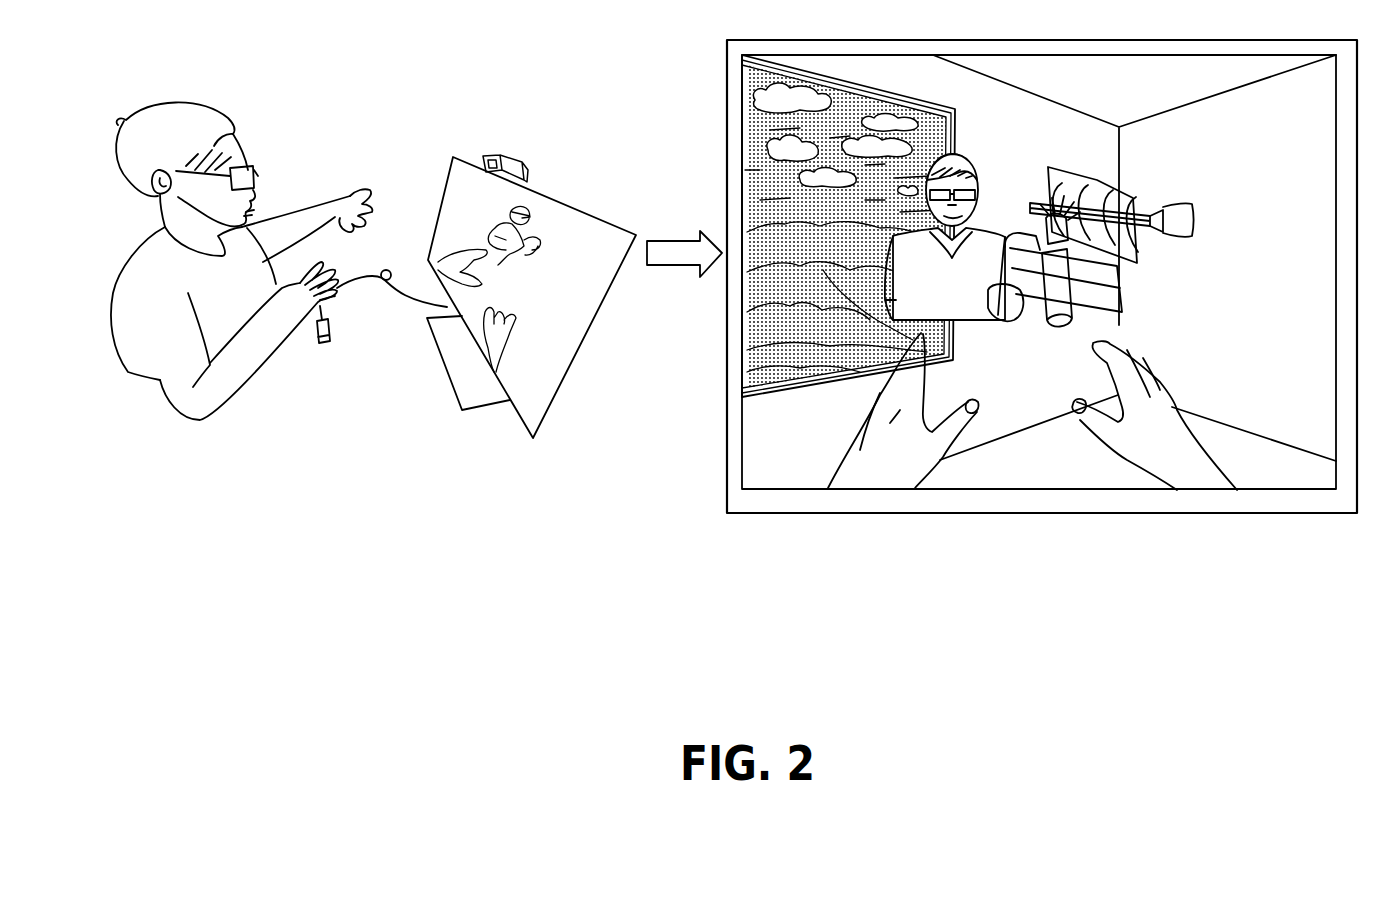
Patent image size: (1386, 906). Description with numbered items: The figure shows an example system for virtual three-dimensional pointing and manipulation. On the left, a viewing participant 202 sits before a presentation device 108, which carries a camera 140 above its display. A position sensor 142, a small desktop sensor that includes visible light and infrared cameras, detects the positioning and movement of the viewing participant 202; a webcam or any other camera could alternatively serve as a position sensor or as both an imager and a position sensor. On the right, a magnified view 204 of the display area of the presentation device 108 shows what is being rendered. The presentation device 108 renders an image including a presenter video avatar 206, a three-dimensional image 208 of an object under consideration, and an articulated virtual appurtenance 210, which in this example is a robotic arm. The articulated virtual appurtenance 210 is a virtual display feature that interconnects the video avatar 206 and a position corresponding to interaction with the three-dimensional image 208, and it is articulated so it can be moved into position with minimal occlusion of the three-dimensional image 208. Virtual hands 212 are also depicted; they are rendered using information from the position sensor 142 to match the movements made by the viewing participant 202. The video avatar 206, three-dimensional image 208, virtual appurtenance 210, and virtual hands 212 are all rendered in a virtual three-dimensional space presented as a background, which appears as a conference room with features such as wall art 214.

The viewing participant 202 is at (207, 110).
The presentation device 108 is at (576, 207).
The camera 140 is at (505, 157).
The position sensor 142 is at (329, 345).
The magnified view 204 is at (722, 478).
The presenter video avatar 206 is at (975, 160).
The 3D image 208 is at (1135, 197).
The articulated virtual appurtenance 210 is at (1027, 330).
The virtual hands 212 is at (1170, 390).
The wall art 214 is at (925, 97).